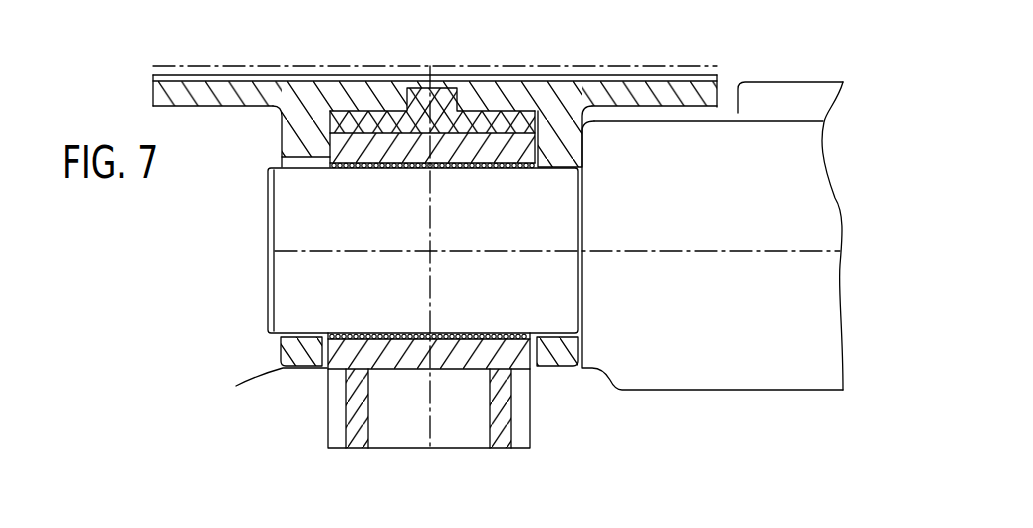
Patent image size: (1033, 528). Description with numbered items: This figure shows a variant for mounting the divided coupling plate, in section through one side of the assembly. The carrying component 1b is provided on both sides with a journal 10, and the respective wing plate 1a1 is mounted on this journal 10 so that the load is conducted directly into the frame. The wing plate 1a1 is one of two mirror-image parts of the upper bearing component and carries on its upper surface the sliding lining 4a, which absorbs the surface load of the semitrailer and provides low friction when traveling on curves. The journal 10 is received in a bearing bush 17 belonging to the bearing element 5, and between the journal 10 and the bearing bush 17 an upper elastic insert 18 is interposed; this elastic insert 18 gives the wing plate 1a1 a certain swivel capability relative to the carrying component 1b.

The sliding lining 4a is at (190, 64).
The wing plate 1a1 is at (305, 123).
The upper elastic insert 18 is at (343, 127).
The bearing bush 17 is at (510, 147).
The journal 10 is at (322, 268).
The bearing element 5 is at (365, 398).
The carrying component 1b is at (698, 328).